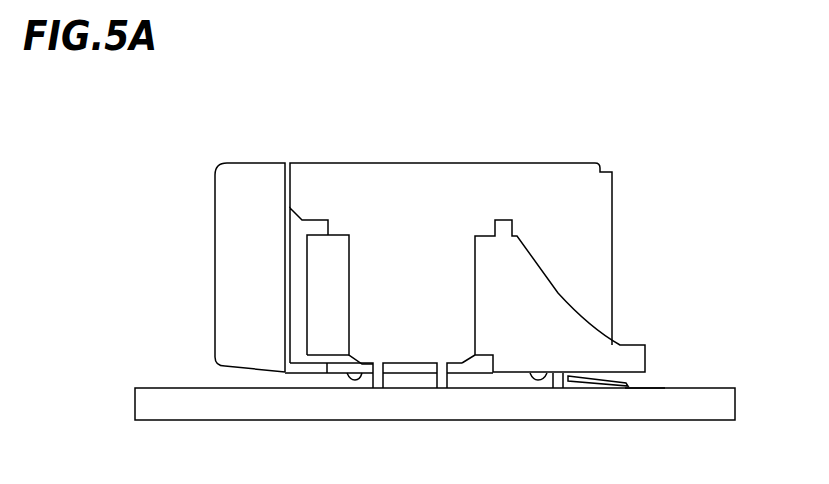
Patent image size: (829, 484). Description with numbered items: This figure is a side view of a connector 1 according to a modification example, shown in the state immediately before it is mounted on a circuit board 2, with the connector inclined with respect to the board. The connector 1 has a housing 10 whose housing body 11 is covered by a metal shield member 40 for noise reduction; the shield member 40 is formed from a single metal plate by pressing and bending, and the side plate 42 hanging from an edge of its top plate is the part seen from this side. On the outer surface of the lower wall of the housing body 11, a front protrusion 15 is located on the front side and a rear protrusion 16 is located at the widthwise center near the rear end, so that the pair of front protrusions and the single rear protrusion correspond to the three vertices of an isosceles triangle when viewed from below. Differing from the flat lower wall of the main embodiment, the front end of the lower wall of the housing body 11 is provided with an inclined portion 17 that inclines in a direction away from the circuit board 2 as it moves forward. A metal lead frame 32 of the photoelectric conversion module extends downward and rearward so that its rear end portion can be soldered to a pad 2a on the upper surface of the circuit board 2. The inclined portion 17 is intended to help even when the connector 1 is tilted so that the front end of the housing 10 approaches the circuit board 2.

The connector 1 is at (609, 142).
The circuit board 2 is at (709, 420).
The pad 2a is at (642, 387).
The housing 10 is at (251, 178).
The housing body 11 is at (250, 236).
The front protrusion 15 is at (352, 380).
The rear protrusion 16 is at (540, 380).
The inclined portion 17 is at (244, 374).
The lead frame 32 is at (616, 390).
The shield member 40 is at (413, 212).
The side plate 42 is at (448, 244).